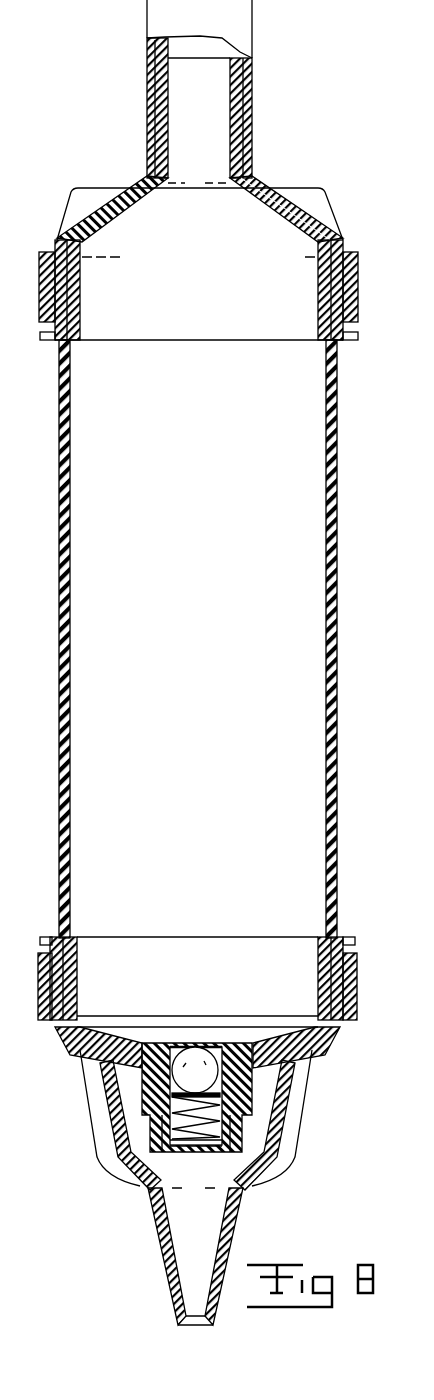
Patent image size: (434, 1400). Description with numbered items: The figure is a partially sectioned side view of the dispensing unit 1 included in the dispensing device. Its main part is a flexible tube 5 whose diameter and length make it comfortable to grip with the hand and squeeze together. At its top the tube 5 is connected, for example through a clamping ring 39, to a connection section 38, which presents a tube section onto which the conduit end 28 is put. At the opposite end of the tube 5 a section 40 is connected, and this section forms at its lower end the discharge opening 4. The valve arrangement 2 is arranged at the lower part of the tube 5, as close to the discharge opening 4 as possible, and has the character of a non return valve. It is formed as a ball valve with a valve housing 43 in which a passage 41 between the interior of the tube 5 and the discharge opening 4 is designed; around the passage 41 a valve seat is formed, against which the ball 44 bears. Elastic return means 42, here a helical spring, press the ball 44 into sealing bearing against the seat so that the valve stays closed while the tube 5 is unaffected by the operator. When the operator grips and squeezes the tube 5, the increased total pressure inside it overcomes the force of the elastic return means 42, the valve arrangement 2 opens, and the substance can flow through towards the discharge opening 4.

The dispensing unit 1 is at (369, 586).
The valve arrangement 2 is at (140, 1015).
The discharge opening 4 is at (193, 1313).
The flexible tube 5 is at (332, 703).
The conduit end 28 is at (232, 18).
The connection section 38 is at (290, 213).
The clamping ring 39 is at (357, 297).
The section 40 is at (283, 1132).
The passage 41 is at (199, 1047).
The elastic return means 42 is at (197, 1150).
The valve housing 43 is at (158, 1043).
The ball 44 is at (207, 1072).